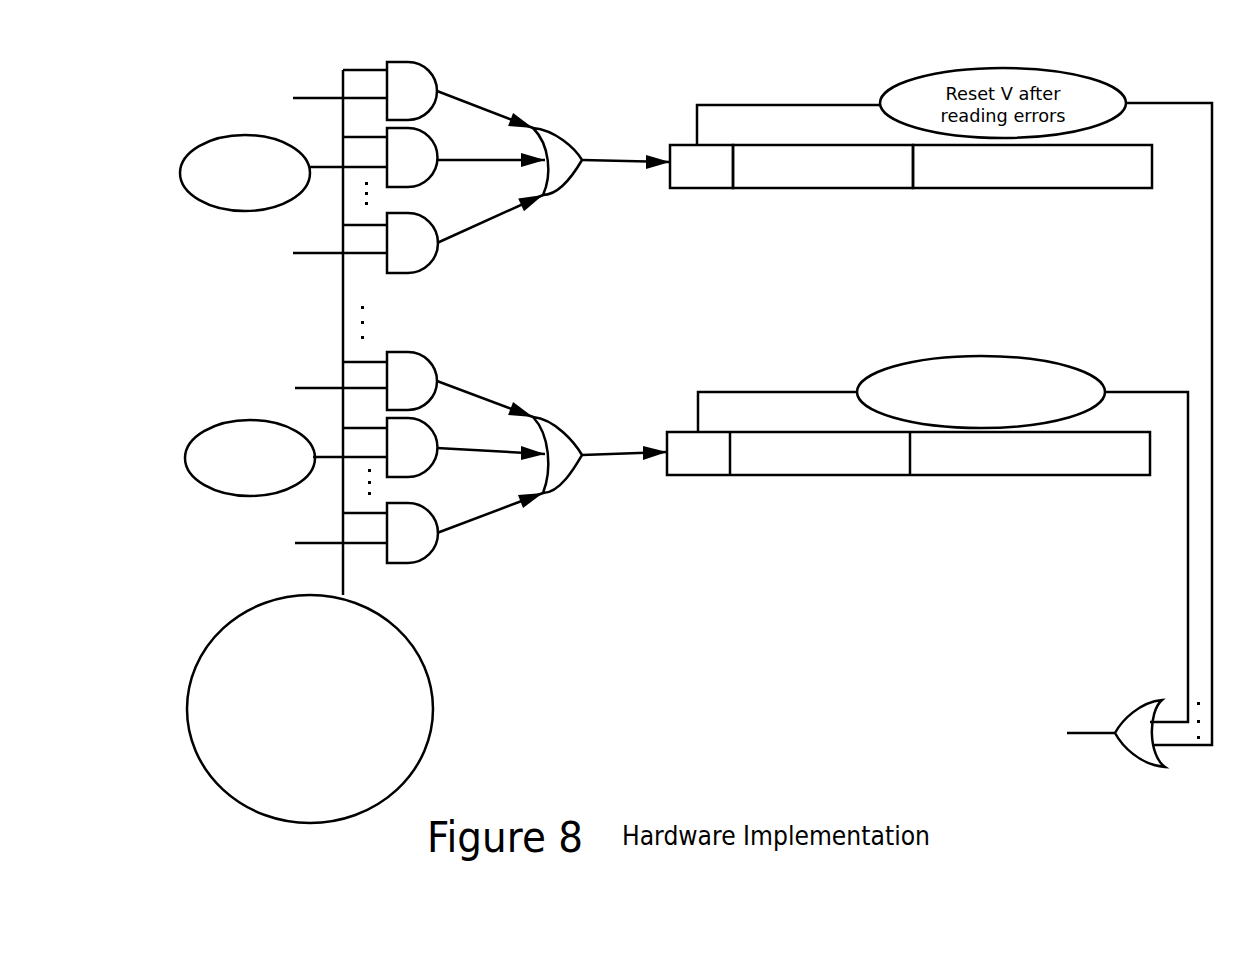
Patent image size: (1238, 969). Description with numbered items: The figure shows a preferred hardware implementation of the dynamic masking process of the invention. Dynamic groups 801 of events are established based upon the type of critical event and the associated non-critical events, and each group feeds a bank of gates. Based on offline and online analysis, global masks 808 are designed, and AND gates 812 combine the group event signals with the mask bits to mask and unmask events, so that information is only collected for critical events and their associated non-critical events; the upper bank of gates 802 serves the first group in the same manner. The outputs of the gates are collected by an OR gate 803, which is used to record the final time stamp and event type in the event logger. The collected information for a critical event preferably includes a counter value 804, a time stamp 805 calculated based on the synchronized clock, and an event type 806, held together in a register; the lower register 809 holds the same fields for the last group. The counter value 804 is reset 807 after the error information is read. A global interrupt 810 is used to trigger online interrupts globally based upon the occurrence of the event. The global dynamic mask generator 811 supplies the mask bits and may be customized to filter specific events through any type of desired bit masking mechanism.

The dynamic groups 801 is at (282, 277).
The AND gates (mask) 802 is at (466, 203).
The OR gate 803 is at (575, 271).
The counter value 804 is at (775, 201).
The time stamp 805 is at (823, 210).
The event type 806 is at (1032, 216).
The reset 807 is at (943, 514).
The global masks 808 is at (324, 320).
The event register 809 is at (908, 507).
The global interrupt 810 is at (1083, 691).
The global dynamic mask generators 811 is at (305, 667).
The AND gates 812 is at (466, 498).